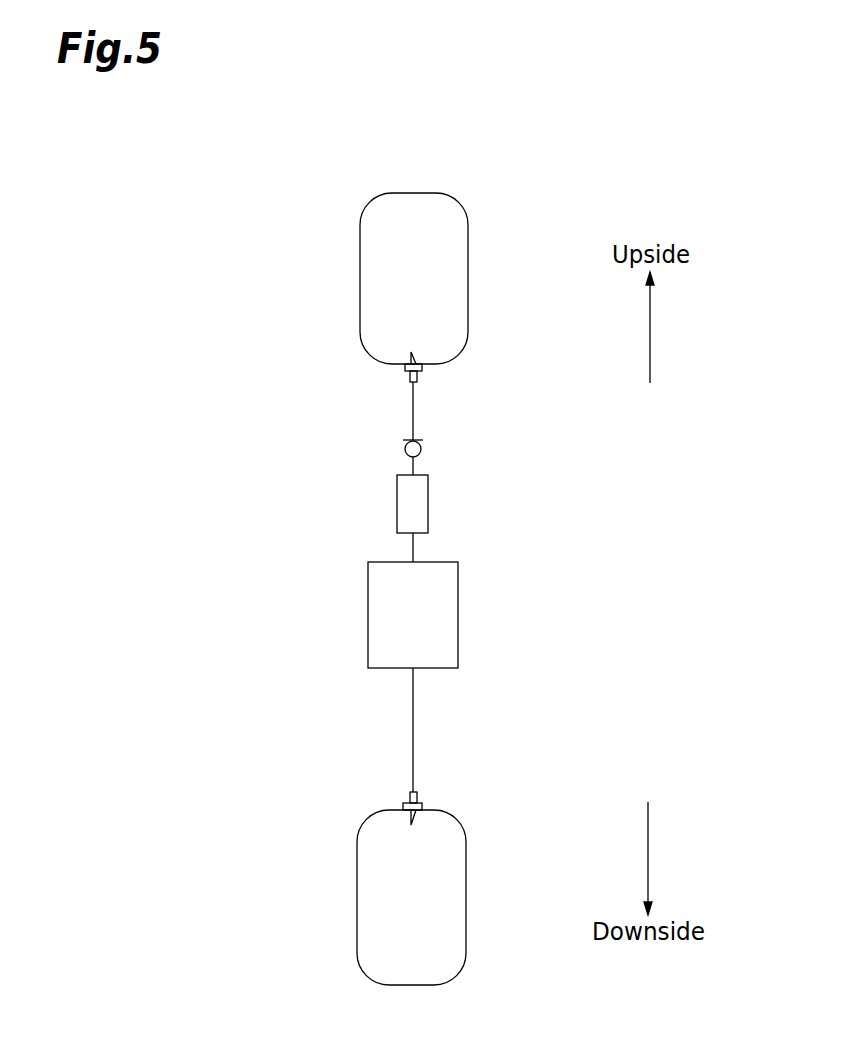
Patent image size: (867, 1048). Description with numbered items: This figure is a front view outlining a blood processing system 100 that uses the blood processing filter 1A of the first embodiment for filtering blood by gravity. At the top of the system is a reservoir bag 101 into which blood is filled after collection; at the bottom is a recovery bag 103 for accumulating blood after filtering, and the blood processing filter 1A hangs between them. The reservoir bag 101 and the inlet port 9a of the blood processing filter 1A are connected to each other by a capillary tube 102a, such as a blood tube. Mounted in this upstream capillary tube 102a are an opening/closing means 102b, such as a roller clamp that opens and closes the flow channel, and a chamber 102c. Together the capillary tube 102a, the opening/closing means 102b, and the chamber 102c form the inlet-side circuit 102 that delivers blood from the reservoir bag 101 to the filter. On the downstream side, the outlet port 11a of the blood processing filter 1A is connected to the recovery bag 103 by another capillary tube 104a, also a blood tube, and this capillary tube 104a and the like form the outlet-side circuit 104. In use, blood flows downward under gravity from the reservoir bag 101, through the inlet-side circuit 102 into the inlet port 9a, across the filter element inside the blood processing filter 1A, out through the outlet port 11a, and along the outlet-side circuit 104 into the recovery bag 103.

The blood processing system 100 is at (493, 153).
The reservoir bag 101 is at (468, 297).
The inlet-side circuit 102 is at (416, 406).
The capillary tube 102a is at (411, 438).
The opening/closing means 102b is at (405, 449).
The chamber 102c is at (397, 492).
The inlet port 9a is at (414, 560).
The blood processing filter 1A is at (458, 605).
The outlet port 11a is at (411, 669).
The outlet-side circuit 104 is at (416, 725).
The capillary tube 104a is at (414, 770).
The recovery bag 103 is at (466, 908).